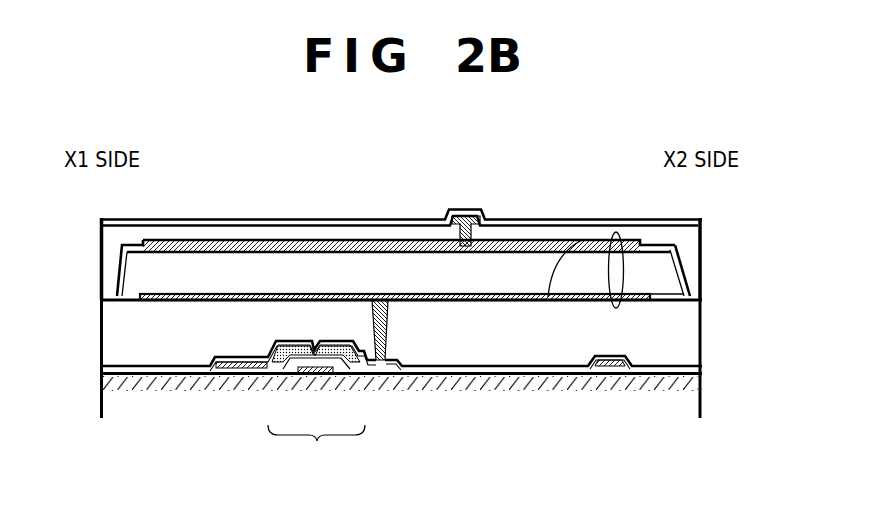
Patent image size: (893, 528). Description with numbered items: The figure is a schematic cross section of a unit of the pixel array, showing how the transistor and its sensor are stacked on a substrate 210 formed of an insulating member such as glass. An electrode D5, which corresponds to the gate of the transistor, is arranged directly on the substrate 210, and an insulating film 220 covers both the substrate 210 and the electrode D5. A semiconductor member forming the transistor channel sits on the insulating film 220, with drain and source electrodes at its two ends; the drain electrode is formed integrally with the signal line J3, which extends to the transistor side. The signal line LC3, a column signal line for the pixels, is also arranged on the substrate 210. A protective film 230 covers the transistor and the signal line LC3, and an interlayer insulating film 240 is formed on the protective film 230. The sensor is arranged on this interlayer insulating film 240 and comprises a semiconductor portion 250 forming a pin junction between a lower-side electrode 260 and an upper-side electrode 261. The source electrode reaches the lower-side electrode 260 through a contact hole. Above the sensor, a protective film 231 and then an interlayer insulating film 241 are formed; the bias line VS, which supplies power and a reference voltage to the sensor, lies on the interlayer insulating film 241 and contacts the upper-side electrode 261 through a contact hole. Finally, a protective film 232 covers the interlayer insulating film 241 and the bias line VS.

The protective film 231 is at (132, 243).
The interlayer insulating film 241 is at (178, 233).
The protective film 232 is at (238, 219).
The bias line VS is at (465, 216).
The semiconductor portion 250 is at (515, 262).
The upper-side electrode 261 is at (552, 248).
The lower-side electrode 260 is at (583, 248).
The interlayer insulating film 240 is at (694, 327).
The protective film 230 is at (698, 367).
The insulating film 220 is at (698, 377).
The substrate 210 is at (694, 407).
The signal line J3 is at (237, 371).
The electrode D5 is at (313, 377).
The signal line LC3 is at (605, 372).